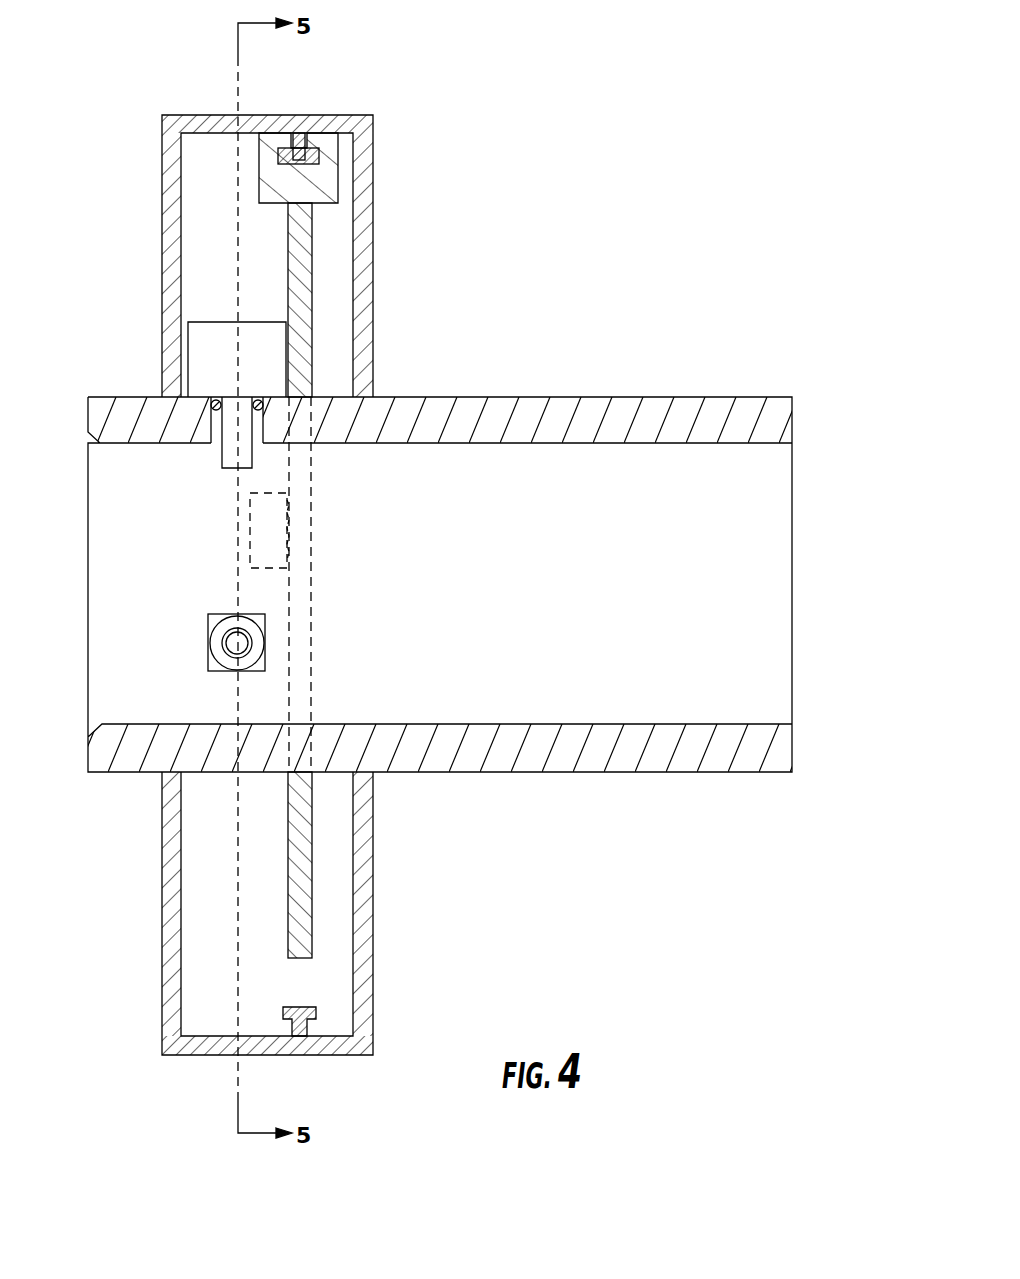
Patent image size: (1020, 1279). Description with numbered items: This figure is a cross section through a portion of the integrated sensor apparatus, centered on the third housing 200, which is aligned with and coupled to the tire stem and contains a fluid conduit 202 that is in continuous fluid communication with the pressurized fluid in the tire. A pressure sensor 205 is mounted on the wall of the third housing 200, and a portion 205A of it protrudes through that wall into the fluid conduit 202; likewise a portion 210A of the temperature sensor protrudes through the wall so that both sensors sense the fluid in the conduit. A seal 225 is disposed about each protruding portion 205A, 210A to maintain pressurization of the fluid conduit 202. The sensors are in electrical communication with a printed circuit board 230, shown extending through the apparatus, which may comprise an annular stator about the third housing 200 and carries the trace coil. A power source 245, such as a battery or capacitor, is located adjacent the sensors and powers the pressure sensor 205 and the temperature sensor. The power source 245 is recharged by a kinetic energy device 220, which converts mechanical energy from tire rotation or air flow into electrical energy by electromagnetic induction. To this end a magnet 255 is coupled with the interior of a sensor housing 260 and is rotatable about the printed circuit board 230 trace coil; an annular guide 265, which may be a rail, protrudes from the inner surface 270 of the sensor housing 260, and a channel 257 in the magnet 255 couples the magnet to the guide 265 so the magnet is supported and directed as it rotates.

The third housing 200 is at (608, 756).
The fluid conduit 202 is at (659, 692).
The pressure sensor 205 is at (208, 343).
The portion of the pressure sensor 205A is at (230, 446).
The portion of the temperature sensor 210A is at (228, 645).
The kinetic energy device 220 is at (215, 203).
The seal 225 is at (215, 397).
The printed circuit board 230 is at (302, 258).
The power source 245 is at (267, 523).
The magnet 255 is at (322, 190).
The channel 257 is at (322, 157).
The sensor housing 260 is at (365, 333).
The annular guide 265 is at (298, 150).
The inner surface 270 is at (193, 126).